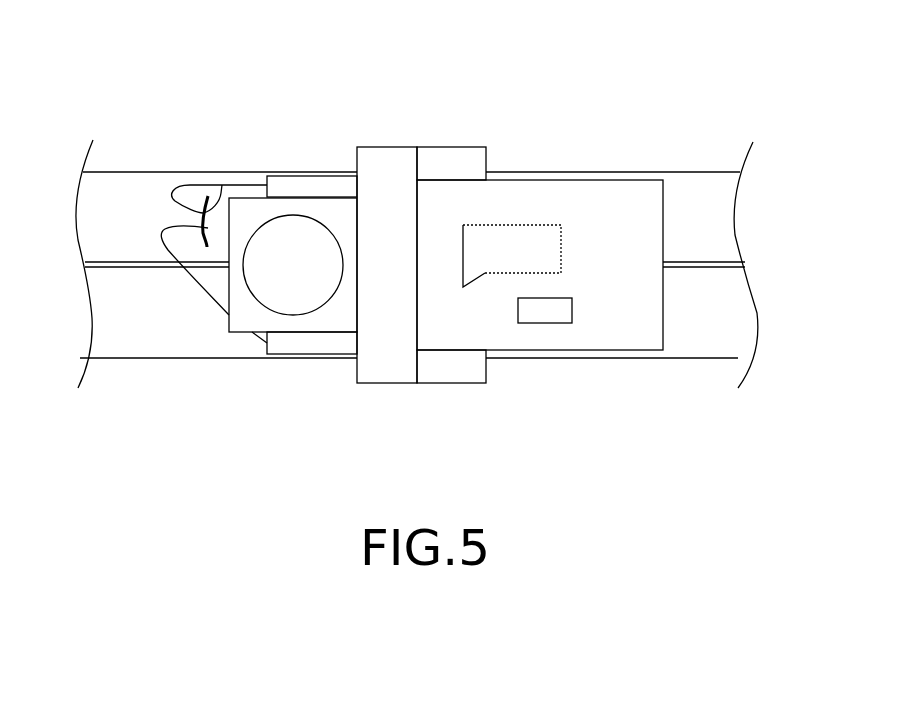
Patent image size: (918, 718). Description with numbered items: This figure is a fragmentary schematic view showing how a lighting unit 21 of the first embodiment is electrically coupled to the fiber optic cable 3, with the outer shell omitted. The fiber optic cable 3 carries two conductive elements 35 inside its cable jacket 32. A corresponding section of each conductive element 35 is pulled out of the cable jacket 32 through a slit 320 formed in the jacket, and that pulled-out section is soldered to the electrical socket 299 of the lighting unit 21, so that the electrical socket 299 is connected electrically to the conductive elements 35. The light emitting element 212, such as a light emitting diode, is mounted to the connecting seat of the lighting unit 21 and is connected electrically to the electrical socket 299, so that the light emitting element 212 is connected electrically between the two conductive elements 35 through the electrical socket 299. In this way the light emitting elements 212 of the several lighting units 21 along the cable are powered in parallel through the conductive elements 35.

The fiber optic cable 3 is at (698, 148).
The cable jacket 32 is at (717, 215).
The conductive element 35 is at (188, 190).
The slit 320 is at (220, 198).
The lighting unit 21 is at (396, 124).
The light emitting element 212 is at (292, 317).
The electrical socket 299 is at (588, 192).